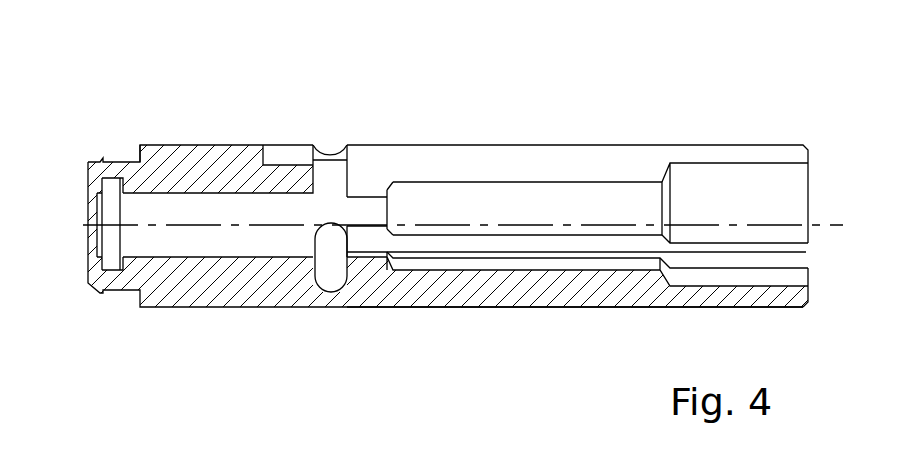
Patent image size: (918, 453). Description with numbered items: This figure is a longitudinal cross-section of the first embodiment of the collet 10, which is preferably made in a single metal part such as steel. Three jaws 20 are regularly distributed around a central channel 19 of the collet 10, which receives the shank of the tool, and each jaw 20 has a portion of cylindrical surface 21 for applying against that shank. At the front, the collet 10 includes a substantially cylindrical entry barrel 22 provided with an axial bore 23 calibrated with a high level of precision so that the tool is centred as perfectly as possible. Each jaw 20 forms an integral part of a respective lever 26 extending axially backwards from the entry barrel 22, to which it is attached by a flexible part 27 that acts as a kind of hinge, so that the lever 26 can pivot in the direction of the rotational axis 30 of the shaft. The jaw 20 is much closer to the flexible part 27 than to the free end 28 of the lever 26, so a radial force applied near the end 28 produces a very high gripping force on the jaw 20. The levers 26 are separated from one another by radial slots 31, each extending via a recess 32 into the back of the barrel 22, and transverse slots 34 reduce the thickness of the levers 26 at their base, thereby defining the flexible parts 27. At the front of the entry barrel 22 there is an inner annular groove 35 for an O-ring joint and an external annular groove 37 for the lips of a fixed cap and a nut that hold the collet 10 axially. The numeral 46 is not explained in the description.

The collet 10 is at (752, 98).
The central channel 19 is at (527, 208).
The jaw 20 is at (357, 193).
The portion of cylindrical surface 21 is at (377, 205).
The entry barrel 22 is at (205, 170).
The axial bore 23 is at (133, 245).
The lever 26 is at (613, 172).
The flexible part 27 is at (337, 177).
The free end 28 is at (782, 212).
The rotational axis 30 is at (828, 225).
The radial slot 31 is at (797, 260).
The recess 32 is at (277, 157).
The transverse slot 34 is at (327, 263).
The inner annular groove 35 is at (110, 210).
The external annular groove 37 is at (128, 158).
The sleeve wall 46 is at (735, 307).